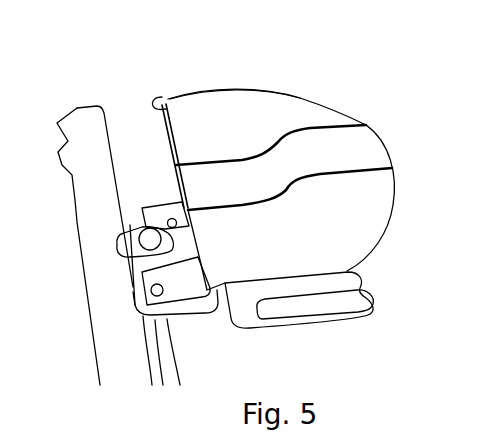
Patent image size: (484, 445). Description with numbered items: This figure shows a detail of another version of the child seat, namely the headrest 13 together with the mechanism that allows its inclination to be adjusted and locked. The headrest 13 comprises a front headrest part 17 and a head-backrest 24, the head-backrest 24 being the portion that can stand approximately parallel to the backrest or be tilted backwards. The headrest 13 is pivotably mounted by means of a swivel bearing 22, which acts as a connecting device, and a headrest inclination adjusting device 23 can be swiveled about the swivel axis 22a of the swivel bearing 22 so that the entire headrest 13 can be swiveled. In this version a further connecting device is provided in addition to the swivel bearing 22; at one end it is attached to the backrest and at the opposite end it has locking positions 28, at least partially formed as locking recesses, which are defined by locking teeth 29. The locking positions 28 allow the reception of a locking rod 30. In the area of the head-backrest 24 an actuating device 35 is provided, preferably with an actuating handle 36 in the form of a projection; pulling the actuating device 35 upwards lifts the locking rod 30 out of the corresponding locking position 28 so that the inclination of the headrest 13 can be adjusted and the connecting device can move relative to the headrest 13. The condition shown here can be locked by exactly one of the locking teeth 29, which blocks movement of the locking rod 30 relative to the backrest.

The headrest 13 is at (291, 77).
The front headrest part 17 is at (233, 123).
The actuating device 35 is at (366, 125).
The head-backrest 24 is at (392, 168).
The actuating handle 36 is at (159, 97).
The locking positions 28 is at (158, 212).
The locking teeth 29 is at (147, 211).
The swivel bearing 22 is at (142, 291).
The swivel axis 22a is at (151, 293).
The headrest inclination adjusting device 23 is at (180, 284).
The locking rod 30 is at (448, 432).